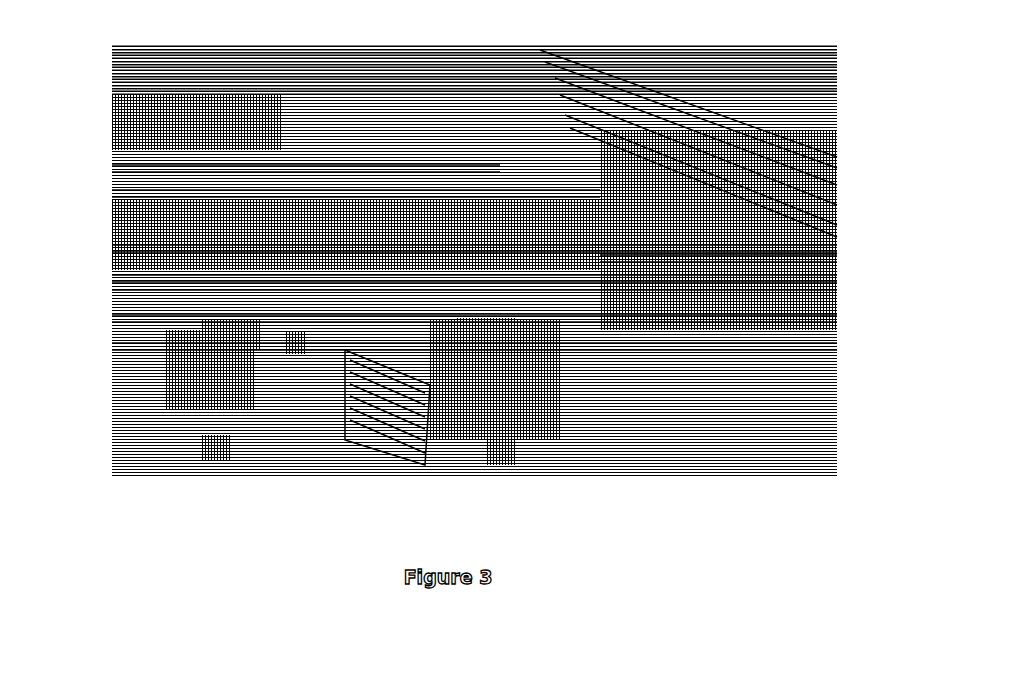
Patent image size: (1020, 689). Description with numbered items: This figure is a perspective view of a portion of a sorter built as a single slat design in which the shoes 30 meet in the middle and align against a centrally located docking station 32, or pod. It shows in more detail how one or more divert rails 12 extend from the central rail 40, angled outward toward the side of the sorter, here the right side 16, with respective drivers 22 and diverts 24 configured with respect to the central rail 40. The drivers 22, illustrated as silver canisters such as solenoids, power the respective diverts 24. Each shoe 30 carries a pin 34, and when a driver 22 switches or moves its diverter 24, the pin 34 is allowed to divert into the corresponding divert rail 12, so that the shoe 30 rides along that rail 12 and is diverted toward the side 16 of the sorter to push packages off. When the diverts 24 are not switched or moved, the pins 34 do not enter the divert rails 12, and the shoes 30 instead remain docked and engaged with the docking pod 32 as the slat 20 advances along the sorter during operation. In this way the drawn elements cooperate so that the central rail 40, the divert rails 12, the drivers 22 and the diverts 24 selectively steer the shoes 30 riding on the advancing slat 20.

The divert rail 12 is at (443, 197).
The right side 16 is at (733, 117).
The slat 20 is at (610, 290).
The driver 22 is at (214, 457).
The divert 24 is at (227, 335).
The shoe 30 is at (320, 235).
The docking station 32 is at (420, 237).
The pin 34 is at (297, 343).
The central rail 40 is at (380, 430).